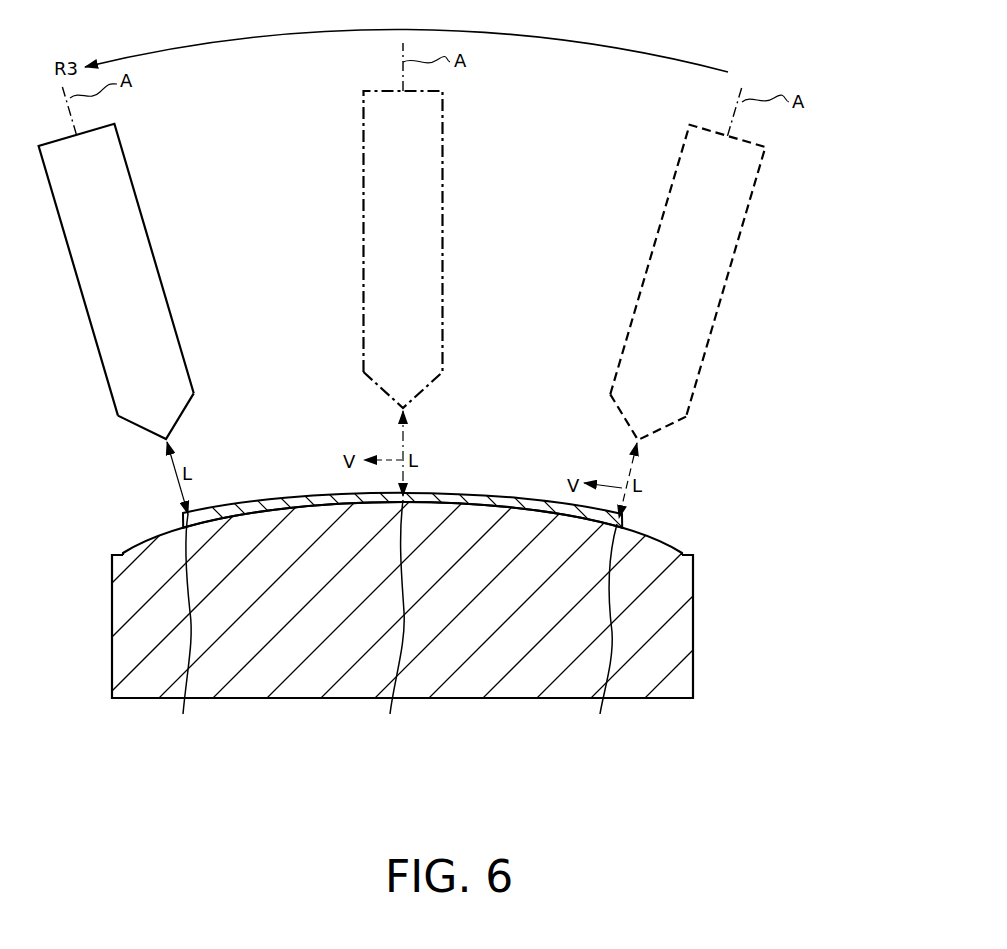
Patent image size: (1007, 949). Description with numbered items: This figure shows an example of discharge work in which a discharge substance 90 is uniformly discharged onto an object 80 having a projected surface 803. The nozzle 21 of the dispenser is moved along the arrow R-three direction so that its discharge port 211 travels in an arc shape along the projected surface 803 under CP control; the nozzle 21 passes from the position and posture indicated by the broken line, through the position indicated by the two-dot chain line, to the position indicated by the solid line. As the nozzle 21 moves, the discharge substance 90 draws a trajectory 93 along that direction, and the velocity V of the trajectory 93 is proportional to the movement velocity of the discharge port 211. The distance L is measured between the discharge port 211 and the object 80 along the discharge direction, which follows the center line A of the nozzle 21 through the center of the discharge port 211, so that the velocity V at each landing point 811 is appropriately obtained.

The nozzle 21 is at (153, 253).
The discharge port 211 is at (169, 440).
The object 80 is at (698, 585).
The projected surface 803 is at (652, 543).
The landing point 811 is at (388, 620).
The trajectory 93 is at (537, 494).
The discharge substance 90 is at (436, 494).